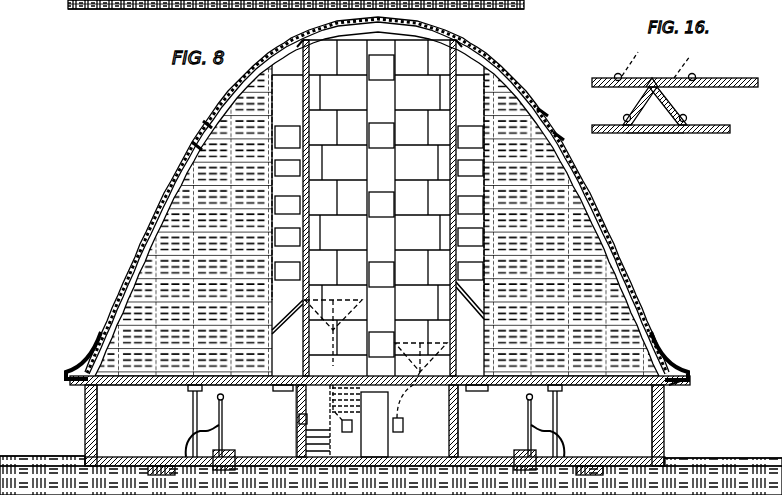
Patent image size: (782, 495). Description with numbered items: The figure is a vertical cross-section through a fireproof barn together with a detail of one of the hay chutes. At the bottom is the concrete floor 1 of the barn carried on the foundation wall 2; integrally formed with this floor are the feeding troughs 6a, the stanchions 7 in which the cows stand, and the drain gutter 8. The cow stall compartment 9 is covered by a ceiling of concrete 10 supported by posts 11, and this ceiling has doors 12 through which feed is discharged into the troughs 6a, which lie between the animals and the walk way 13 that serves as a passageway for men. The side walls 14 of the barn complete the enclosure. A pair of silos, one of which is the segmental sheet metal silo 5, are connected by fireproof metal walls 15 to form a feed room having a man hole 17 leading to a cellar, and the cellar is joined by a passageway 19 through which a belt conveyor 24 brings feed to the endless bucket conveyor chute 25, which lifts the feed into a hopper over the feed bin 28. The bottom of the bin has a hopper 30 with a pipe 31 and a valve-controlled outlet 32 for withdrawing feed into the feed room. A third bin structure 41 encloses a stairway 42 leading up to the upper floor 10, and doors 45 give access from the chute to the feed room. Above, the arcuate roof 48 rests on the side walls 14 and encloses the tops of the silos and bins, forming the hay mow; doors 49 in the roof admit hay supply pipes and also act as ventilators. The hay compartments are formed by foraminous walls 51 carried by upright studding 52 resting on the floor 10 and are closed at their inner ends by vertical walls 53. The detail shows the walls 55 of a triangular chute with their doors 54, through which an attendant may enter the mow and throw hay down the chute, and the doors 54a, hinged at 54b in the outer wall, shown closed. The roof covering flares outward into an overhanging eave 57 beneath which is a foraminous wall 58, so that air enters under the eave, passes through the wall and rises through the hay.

In FIG. 8, the floor of the barn 1 is at (624, 438).
In FIG. 8, the foundation wall 2 is at (42, 475).
In FIG. 8, the segmental sheet metal silo 5 is at (457, 82).
In FIG. 8, the feeding trough 6a is at (237, 450).
In FIG. 8, the stanchion 7 is at (185, 433).
In FIG. 8, the drain gutter 8 is at (160, 465).
In FIG. 8, the cow stall compartment 9 is at (132, 407).
In FIG. 8, the ceiling of concrete 10 is at (606, 386).
In FIG. 8, the post 11 is at (192, 403).
In FIG. 8, the door 12 is at (283, 391).
In FIG. 8, the walk way 13 is at (273, 457).
In FIG. 16, the walk way 13 is at (596, 112).
In FIG. 8, the side wall 14 is at (664, 446).
In FIG. 8, the fireproof metal wall 15 is at (306, 415).
In FIG. 8, the man hole 17 is at (705, 481).
In FIG. 8, the passageway 19 is at (296, 14).
In FIG. 8, the belt conveyor 24 is at (296, 12).
In FIG. 8, the endless bucket conveyor chute 25 is at (296, 10).
In FIG. 8, the feed bin 28 is at (405, 255).
In FIG. 8, the hopper 30 is at (395, 329).
In FIG. 8, the pipe 31 is at (341, 362).
In FIG. 8, the outlet 32 is at (357, 430).
In FIG. 8, the third bin structure 41 is at (347, 224).
In FIG. 8, the stairway 42 is at (299, 420).
In FIG. 8, the door 45 is at (356, 195).
In FIG. 8, the arcuate roof 48 is at (499, 66).
In FIG. 8, the door 49 is at (205, 126).
In FIG. 8, the foraminous wall 51 is at (612, 293).
In FIG. 8, the upright studding 52 is at (612, 264).
In FIG. 8, the vertical wall 53 is at (298, 52).
In FIG. 8, the door 54 is at (298, 176).
In FIG. 16, the door 54 is at (646, 102).
In FIG. 16, the door 54a is at (668, 78).
In FIG. 16, the hinge 54b is at (618, 73).
In FIG. 8, the chute wall 55 is at (284, 124).
In FIG. 16, the chute wall 55 is at (648, 130).
In FIG. 8, the overhanging spaced eave 57 is at (667, 368).
In FIG. 8, the foraminous wall 58 is at (673, 386).